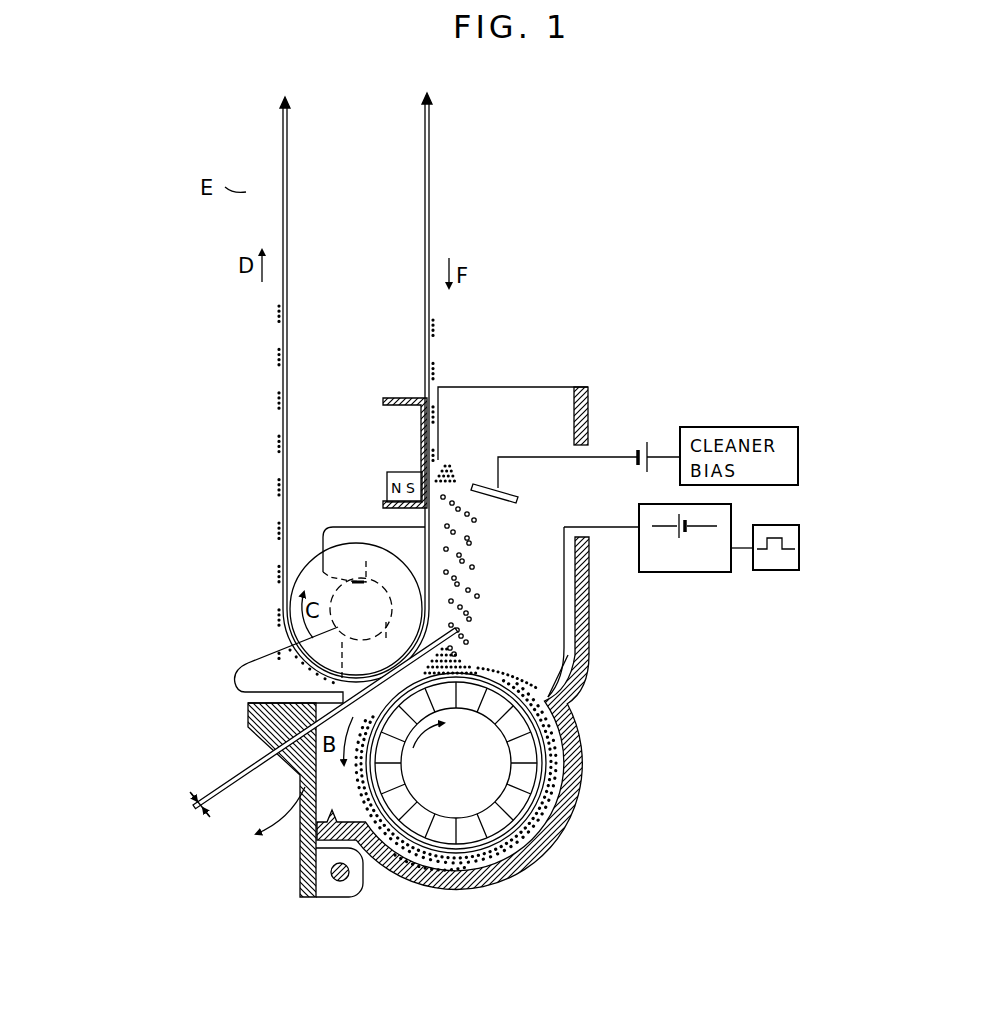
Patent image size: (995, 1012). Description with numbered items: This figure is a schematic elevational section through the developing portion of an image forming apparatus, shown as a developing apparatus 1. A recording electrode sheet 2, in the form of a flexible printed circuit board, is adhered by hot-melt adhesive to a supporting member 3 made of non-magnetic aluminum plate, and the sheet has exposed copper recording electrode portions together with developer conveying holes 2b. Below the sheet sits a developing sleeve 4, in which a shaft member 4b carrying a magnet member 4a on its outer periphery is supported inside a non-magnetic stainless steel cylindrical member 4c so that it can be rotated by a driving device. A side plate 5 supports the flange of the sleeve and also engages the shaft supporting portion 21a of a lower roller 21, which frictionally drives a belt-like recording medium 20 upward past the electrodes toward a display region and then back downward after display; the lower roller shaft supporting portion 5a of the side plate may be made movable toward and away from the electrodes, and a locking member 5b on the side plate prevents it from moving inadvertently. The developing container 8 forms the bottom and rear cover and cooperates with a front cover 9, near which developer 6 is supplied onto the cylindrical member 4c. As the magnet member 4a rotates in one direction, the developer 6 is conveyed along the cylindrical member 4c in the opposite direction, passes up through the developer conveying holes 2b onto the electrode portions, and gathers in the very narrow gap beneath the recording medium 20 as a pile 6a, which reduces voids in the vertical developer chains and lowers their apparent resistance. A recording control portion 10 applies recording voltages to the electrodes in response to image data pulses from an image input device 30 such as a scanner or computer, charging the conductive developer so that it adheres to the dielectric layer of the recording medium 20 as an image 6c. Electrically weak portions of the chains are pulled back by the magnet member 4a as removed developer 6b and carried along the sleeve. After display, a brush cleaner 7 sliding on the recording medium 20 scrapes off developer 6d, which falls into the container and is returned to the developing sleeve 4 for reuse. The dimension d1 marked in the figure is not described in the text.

The developing apparatus 1 is at (503, 708).
The recording electrode sheet 2 is at (588, 668).
The developer conveying holes 2b is at (527, 670).
The supporting member 3 is at (505, 663).
The developing sleeve 4 is at (486, 802).
The magnet member 4a is at (537, 802).
The shaft member 4b is at (456, 763).
The cylindrical member 4c is at (503, 847).
The side plate 5 is at (327, 531).
The lower roller shaft supporting portion 5a is at (365, 580).
The locking member 5b is at (248, 678).
The developer 6 is at (488, 660).
The pile of developer 6a is at (435, 648).
The removed developer 6b is at (437, 857).
The image 6c is at (282, 589).
The scraped developer 6d is at (447, 472).
The cleaner 7 is at (520, 498).
The developing container 8 is at (590, 412).
The front cover 9 is at (302, 878).
The recording control portion 10 is at (677, 575).
The recording medium 20 is at (430, 163).
The lower roller 21 is at (303, 647).
The shaft supporting portion 21a is at (409, 650).
The image input device 30 is at (775, 574).
The plate thickness d1 is at (317, 722).